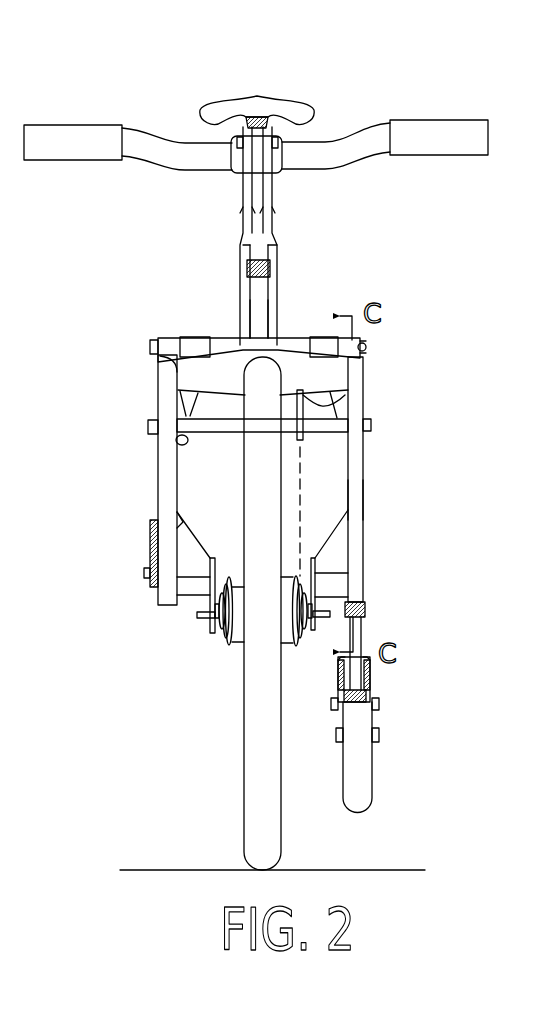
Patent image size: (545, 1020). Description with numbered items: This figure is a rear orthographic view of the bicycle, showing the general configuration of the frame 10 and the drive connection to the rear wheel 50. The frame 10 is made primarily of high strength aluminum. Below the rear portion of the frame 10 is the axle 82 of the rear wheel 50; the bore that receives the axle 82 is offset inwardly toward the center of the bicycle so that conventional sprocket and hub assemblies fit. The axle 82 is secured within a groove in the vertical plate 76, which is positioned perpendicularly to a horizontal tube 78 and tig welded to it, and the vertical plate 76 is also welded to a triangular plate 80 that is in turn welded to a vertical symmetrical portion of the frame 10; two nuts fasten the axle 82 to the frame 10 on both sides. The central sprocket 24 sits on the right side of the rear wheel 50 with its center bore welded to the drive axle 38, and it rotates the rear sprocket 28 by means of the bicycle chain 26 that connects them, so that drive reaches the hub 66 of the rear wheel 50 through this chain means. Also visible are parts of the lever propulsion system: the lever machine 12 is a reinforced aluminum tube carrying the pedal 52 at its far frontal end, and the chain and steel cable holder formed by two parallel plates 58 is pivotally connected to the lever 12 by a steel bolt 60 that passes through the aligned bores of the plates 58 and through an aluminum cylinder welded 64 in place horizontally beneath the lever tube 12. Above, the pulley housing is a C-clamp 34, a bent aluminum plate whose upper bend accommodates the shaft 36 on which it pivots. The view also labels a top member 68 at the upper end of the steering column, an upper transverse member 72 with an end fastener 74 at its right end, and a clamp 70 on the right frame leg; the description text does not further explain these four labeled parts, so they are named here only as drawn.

The frame 10 is at (356, 505).
The lever machine 12 is at (357, 762).
The central sprocket 24 is at (330, 410).
The bicycle chain 26 is at (305, 475).
The rear sprocket 28 is at (300, 648).
The C-clamp 34 is at (320, 338).
The shaft 36 is at (295, 340).
The drive axle 38 is at (218, 430).
The rear wheel 50 is at (278, 787).
The pedal 52 is at (380, 730).
The parallel plates 58 is at (150, 553).
The steel bolt 60 is at (335, 703).
The welded cylinder 64 is at (380, 692).
The hub 66 is at (242, 643).
The handlebar top bracket 68 is at (283, 112).
The leg clamp 70 is at (366, 608).
The upper crossbar 72 is at (222, 338).
The crossbar end bolt 74 is at (366, 347).
The vertical plate 76 is at (210, 633).
The horizontal tube 78 is at (188, 596).
The triangular plate 80 is at (333, 550).
The axle 82 is at (323, 622).